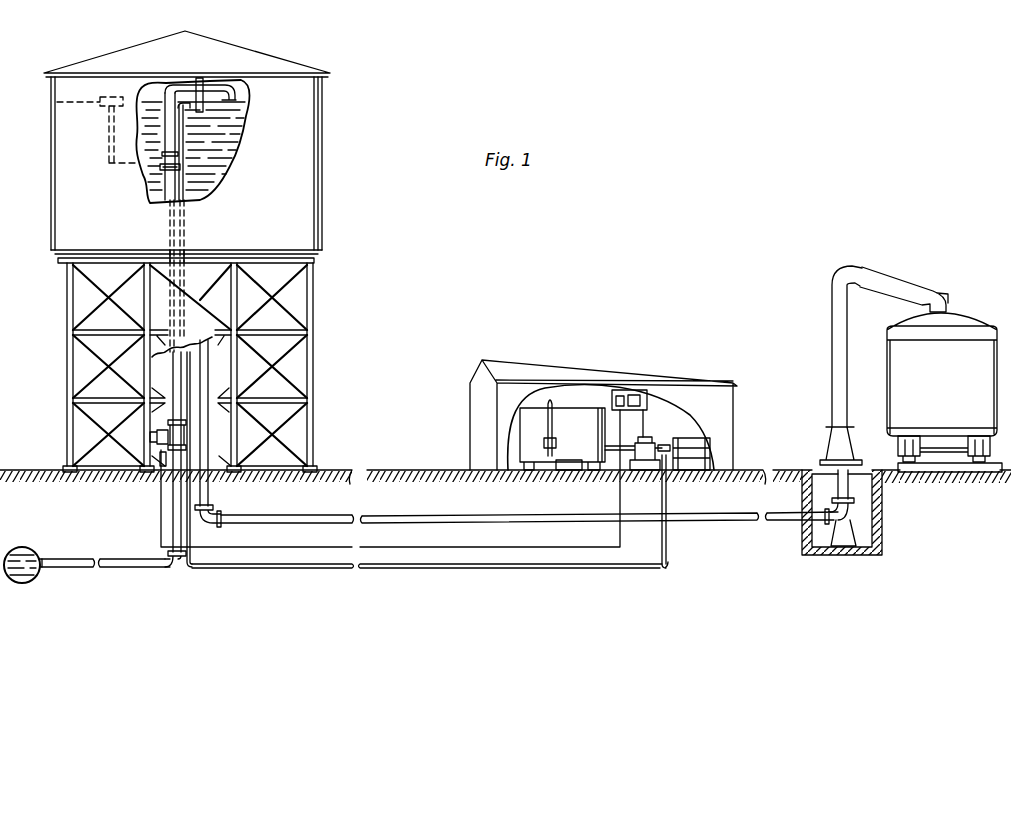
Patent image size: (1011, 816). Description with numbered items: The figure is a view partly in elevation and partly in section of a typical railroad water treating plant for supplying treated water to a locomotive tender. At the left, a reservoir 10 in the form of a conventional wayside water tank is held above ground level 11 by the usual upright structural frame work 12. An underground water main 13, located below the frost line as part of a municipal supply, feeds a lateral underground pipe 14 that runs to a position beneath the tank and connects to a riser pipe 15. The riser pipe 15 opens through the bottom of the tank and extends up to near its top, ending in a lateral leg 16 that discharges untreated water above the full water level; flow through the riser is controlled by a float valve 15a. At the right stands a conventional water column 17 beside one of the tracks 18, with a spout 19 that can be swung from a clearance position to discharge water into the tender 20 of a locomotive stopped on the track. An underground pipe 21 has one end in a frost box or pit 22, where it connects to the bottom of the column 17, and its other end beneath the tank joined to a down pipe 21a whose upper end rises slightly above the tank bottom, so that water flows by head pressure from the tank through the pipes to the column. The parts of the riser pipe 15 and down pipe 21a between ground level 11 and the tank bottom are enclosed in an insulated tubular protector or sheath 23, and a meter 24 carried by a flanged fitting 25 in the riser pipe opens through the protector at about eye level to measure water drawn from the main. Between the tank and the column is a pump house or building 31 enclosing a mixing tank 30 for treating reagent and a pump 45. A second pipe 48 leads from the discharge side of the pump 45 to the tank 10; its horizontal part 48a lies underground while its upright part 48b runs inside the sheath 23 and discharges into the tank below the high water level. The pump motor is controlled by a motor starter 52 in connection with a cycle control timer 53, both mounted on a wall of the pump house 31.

The reservoir 10 is at (48, 137).
The ground level 11 is at (26, 470).
The upright structural frame work 12 is at (313, 321).
The water main 13 is at (40, 548).
The lateral underground pipe 14 is at (92, 561).
The riser pipe 15 is at (172, 509).
The float valve 15a is at (164, 162).
The lateral leg 16 is at (213, 84).
The water column 17 is at (832, 331).
The track 18 is at (940, 468).
The spout 19 is at (905, 285).
The tender 20 is at (942, 387).
The underground pipe 21 is at (697, 524).
The down pipe 21a is at (203, 437).
The frost box or pit 22 is at (878, 543).
The insulated tubular protector or sheath 23 is at (204, 272).
The meter 24 is at (160, 425).
The flanged fitting 25 is at (168, 441).
The mixing tank 30 is at (532, 414).
The pump house or building 31 is at (468, 398).
The pump 45 is at (645, 440).
The second pipe 48 is at (662, 494).
The horizontal part of pipe 48a is at (447, 570).
The upright part of pipe 48b is at (193, 490).
The motor starter 52 is at (637, 399).
The cycle control timer 53 is at (622, 396).